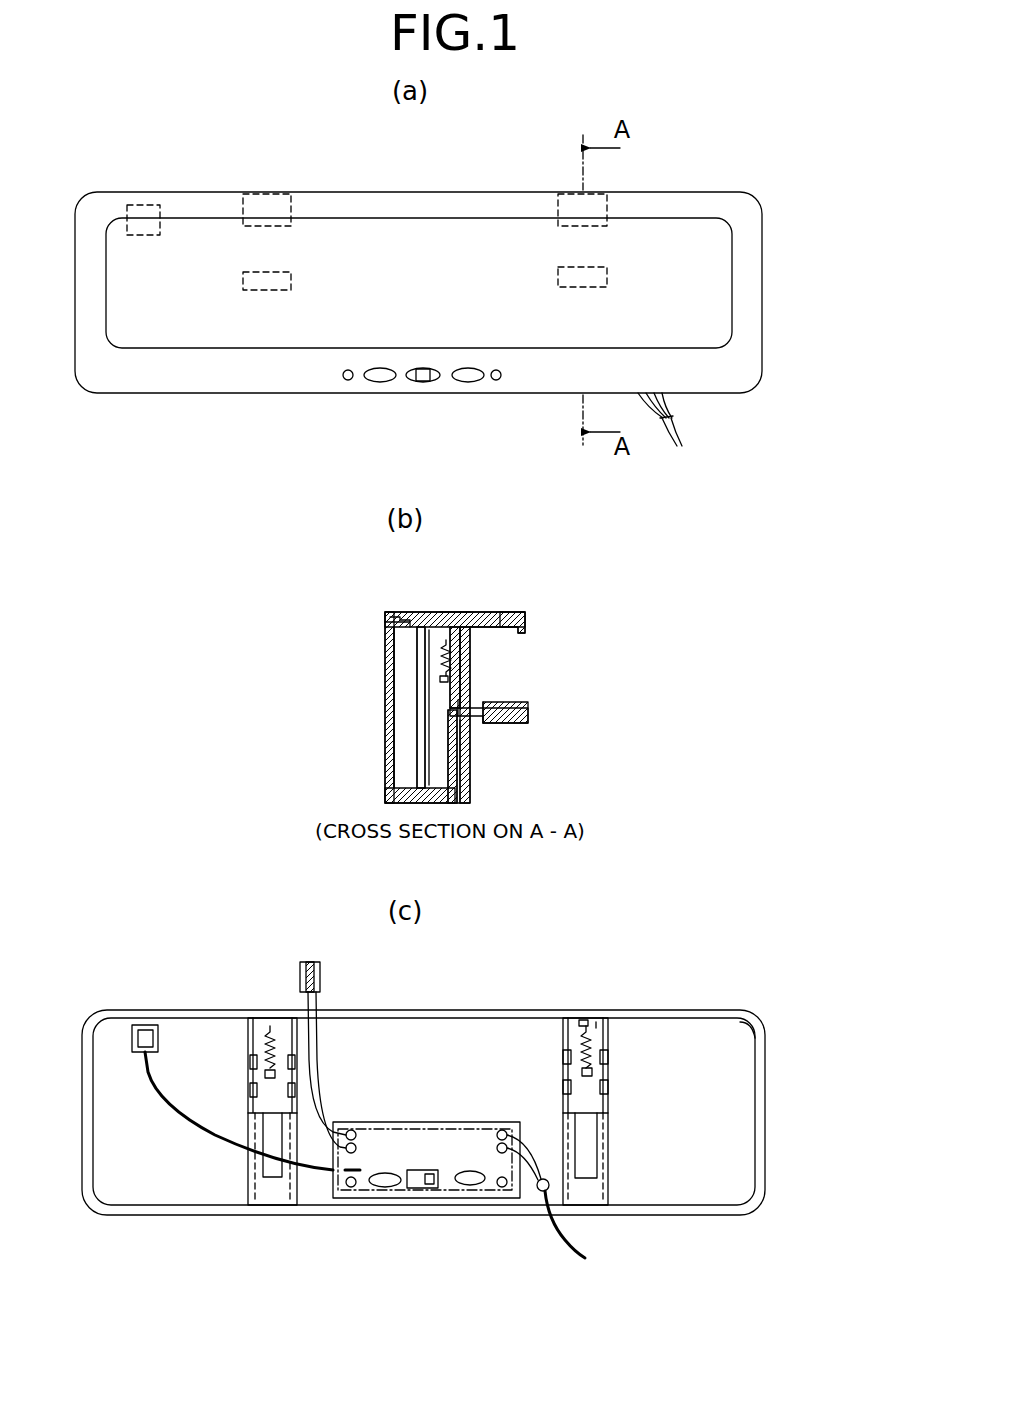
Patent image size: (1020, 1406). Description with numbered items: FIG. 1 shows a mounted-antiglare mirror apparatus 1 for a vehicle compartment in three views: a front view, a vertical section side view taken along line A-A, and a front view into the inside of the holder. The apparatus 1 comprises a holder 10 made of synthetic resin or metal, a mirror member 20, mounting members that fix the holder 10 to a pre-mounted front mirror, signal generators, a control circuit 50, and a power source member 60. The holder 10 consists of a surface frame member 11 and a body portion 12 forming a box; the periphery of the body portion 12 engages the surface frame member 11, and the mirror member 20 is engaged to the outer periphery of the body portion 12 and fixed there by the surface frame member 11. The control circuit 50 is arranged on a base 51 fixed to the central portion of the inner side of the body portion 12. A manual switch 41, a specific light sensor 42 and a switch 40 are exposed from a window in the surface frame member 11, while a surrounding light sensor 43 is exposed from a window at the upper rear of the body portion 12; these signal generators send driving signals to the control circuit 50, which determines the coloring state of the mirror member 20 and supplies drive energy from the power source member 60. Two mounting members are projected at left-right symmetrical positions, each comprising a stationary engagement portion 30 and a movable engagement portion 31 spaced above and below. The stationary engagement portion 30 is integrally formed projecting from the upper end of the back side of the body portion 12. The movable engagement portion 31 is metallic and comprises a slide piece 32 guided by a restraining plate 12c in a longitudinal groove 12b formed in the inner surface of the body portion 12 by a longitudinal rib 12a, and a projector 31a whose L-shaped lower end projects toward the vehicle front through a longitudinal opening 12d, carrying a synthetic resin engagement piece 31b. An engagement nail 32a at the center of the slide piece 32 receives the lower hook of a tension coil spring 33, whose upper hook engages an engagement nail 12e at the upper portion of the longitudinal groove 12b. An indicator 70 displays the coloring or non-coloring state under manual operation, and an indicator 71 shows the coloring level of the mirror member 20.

The mounted-antiglare mirror apparatus 1 is at (686, 145).
The holder 10 is at (750, 230).
The surface frame member 11 is at (388, 660).
The body portion 12 is at (442, 612).
The longitudinal rib 12a is at (608, 1086).
The longitudinal groove 12b is at (596, 1022).
The restraining plate 12c is at (745, 1030).
The longitudinal opening 12d is at (465, 780).
The engagement nail 12e is at (398, 617).
The mirror member 20 is at (710, 298).
The stationary engagement portion 30 is at (265, 200).
The movable engagement portion 31 is at (578, 272).
The projector 31a is at (475, 718).
The engagement piece 31b is at (495, 700).
The slide piece 32 is at (430, 700).
The engagement nail 32a is at (440, 680).
The tension coil spring 33 is at (470, 652).
The switch 40 is at (468, 382).
The manual switch 41 is at (378, 382).
The specific light sensor 42 is at (420, 382).
The surrounding light sensor 43 is at (142, 205).
The control circuit 50 is at (378, 1140).
The base 51 is at (395, 1128).
The power source member 60 is at (676, 430).
The indicator 70 is at (346, 381).
The indicator 71 is at (498, 381).